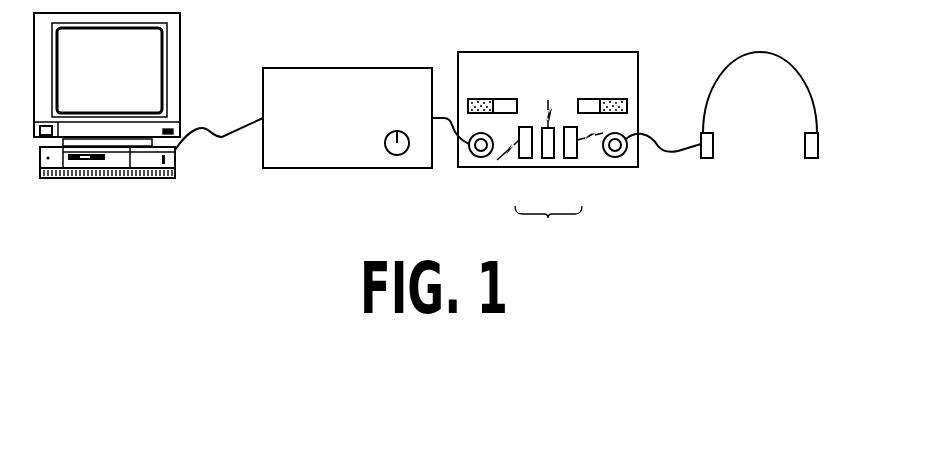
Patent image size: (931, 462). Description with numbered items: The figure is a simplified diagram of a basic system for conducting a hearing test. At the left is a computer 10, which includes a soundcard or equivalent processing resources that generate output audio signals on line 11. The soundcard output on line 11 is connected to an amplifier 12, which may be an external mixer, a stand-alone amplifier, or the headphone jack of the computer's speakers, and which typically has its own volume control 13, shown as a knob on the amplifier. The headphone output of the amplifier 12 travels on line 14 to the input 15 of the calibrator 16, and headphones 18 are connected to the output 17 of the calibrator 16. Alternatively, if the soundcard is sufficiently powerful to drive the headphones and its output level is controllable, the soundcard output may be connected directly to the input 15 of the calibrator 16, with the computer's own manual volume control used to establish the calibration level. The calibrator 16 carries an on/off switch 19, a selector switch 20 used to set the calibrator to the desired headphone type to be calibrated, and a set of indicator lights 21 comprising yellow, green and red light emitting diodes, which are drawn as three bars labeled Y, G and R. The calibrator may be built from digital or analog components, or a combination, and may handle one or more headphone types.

The computer 10 is at (181, 47).
The line 11 is at (193, 141).
The amplifier 12 is at (299, 68).
The volume control 13 is at (386, 146).
The line 14 is at (446, 117).
The input 15 is at (484, 158).
The calibrator 16 is at (549, 52).
The output 17 is at (620, 158).
The headphones 18 is at (760, 52).
The on/off switch 19 is at (481, 99).
The selector switch 20 is at (617, 99).
The indicator lights 21 is at (549, 219).